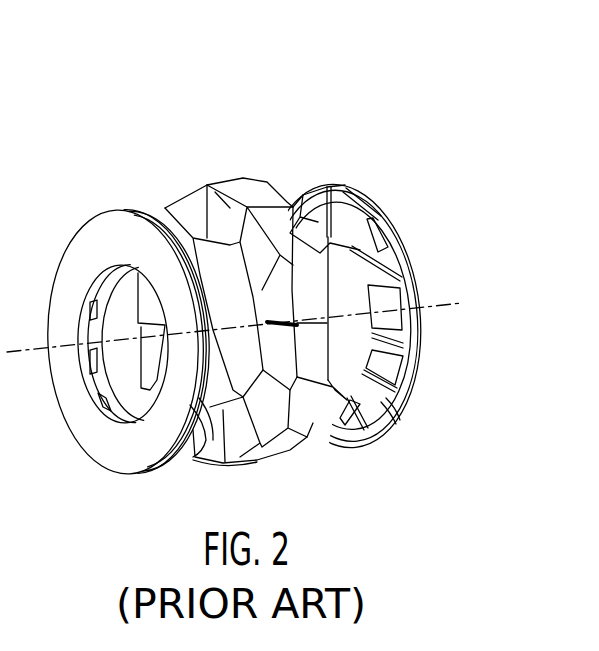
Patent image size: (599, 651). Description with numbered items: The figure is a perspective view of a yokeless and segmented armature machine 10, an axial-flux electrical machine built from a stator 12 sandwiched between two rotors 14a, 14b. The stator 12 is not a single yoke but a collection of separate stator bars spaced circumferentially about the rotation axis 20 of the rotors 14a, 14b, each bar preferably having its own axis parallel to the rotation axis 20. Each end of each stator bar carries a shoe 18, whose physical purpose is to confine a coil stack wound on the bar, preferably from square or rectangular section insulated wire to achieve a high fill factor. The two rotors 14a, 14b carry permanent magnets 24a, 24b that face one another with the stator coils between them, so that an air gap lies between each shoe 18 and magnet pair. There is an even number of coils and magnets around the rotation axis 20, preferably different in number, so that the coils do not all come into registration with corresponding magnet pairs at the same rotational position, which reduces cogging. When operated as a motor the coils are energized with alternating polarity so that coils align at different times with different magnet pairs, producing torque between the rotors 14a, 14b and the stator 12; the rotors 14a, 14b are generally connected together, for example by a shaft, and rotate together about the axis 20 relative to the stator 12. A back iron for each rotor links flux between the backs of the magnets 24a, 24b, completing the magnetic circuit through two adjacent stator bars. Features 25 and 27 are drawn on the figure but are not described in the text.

The yokeless and segmented armature machine 10 is at (197, 78).
The stator 12 is at (260, 178).
The rotor 14a is at (108, 212).
The rotor 14b is at (348, 184).
The shoe 18 is at (243, 443).
The rotation axis 20 is at (33, 354).
The permanent magnet 24a is at (199, 440).
The permanent magnet 24b is at (387, 410).
The ribs 25 is at (380, 250).
The parting lines 27 is at (192, 217).